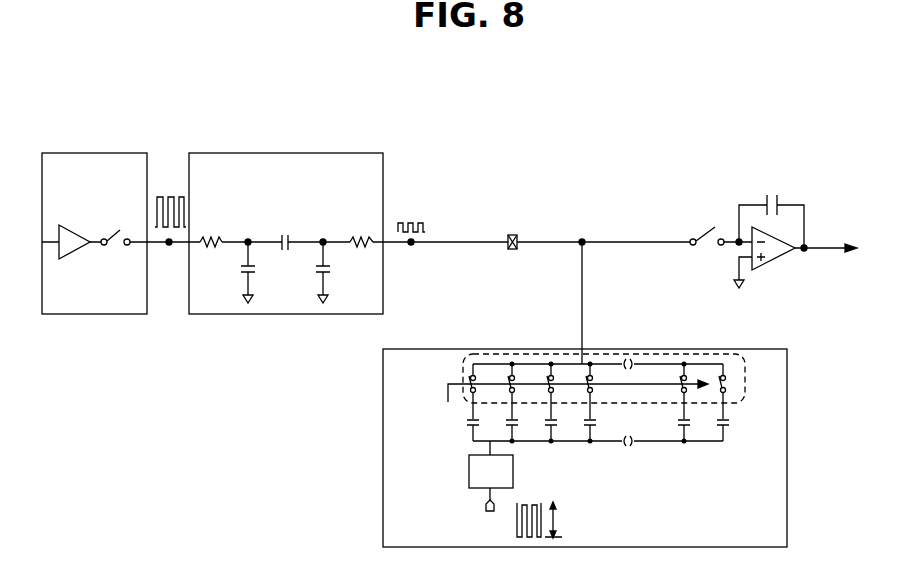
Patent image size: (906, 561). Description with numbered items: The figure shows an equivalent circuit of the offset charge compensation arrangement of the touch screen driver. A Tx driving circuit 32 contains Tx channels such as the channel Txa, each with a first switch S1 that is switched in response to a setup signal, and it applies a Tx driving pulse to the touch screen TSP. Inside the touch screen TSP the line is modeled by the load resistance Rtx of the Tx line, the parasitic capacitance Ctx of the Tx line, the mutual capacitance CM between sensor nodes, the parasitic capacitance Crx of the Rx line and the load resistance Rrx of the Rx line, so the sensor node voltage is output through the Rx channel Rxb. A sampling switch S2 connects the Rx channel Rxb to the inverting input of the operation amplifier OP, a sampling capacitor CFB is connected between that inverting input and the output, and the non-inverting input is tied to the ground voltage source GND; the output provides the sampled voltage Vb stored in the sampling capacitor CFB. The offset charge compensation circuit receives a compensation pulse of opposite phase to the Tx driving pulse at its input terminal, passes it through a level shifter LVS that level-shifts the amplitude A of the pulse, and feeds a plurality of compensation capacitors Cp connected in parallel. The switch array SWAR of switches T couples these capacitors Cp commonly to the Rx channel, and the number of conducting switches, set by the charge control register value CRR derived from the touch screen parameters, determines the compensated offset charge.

The Tx driving circuit 32 is at (88, 153).
The touch screen TSP is at (290, 153).
The Tx channel Txa is at (79, 227).
The first switch S1 is at (115, 248).
The load resistance of the Tx line Rtx is at (209, 232).
The parasitic capacitance of the Tx line Ctx is at (231, 272).
The mutual capacitance CM is at (286, 232).
The parasitic capacitance of the Rx line Crx is at (336, 272).
The load resistance of the Rx line Rrx is at (359, 232).
The Rx channel Rxb is at (511, 231).
The sampling switch S2 is at (707, 247).
The sampling capacitor CFB is at (771, 212).
The operation amplifier OP is at (790, 258).
The ground voltage source GND is at (741, 303).
The sampled voltage Vb is at (873, 249).
The switch array SWAR is at (745, 378).
The charge control register value CRR is at (568, 404).
The compensation capacitor Cp is at (613, 425).
The level shifter LVS is at (491, 476).
The amplitude of the compensation pulse A is at (544, 520).